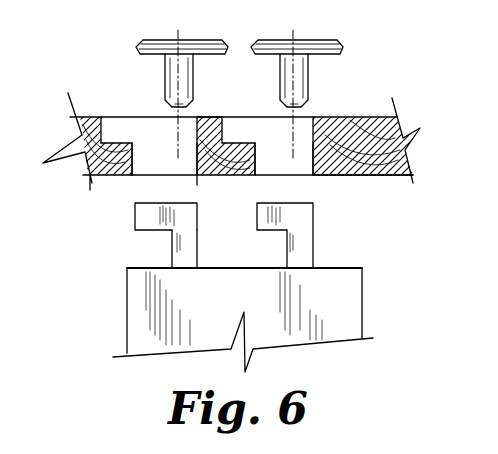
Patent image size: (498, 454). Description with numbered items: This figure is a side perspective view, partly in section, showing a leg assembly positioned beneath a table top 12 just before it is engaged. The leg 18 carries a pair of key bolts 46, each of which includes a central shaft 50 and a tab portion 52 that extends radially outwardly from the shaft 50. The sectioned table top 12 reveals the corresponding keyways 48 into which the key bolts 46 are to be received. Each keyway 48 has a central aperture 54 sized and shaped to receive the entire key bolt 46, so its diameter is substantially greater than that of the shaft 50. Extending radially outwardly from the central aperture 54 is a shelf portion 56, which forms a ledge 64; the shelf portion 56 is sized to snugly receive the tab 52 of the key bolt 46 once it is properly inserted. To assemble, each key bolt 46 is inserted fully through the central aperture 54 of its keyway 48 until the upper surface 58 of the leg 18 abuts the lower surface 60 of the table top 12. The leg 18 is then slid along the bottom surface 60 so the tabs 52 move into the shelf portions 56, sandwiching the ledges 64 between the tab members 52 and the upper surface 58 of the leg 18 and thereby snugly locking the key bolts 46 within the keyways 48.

The table top 12 is at (358, 170).
The leg 18 is at (342, 312).
The key bolt 46 is at (314, 242).
The keyway 48 is at (282, 163).
The central shaft 50 is at (172, 245).
The tab portion 52 is at (147, 218).
The central aperture 54 is at (150, 145).
The shelf portion 56 is at (120, 123).
The upper surface 58 is at (137, 263).
The lower surface 60 is at (385, 176).
The ledge 64 is at (118, 172).